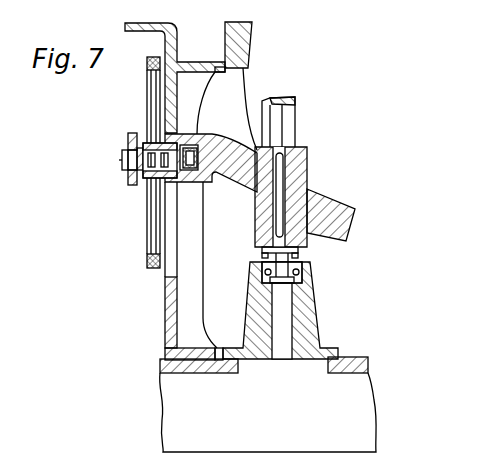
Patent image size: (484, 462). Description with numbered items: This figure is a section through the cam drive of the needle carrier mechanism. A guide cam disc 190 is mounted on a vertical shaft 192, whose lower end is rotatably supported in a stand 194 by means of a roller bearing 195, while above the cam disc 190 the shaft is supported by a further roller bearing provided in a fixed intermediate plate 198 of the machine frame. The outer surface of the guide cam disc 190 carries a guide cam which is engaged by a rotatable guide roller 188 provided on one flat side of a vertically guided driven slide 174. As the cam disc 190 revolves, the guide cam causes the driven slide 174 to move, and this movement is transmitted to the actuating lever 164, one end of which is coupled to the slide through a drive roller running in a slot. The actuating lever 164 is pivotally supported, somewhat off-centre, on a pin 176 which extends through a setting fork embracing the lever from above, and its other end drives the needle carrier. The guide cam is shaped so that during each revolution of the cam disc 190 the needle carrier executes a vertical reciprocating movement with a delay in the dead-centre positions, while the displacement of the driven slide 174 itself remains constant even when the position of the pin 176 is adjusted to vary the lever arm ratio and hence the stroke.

The actuating lever 164 is at (131, 133).
The driven slide 174 is at (152, 239).
The pin 176 is at (133, 186).
The guide roller 188 is at (205, 183).
The guide cam disc 190 is at (206, 134).
The vertical shaft 192 is at (297, 118).
The stand 194 is at (308, 326).
The roller bearing 195 is at (300, 270).
The intermediate plate 198 is at (250, 45).